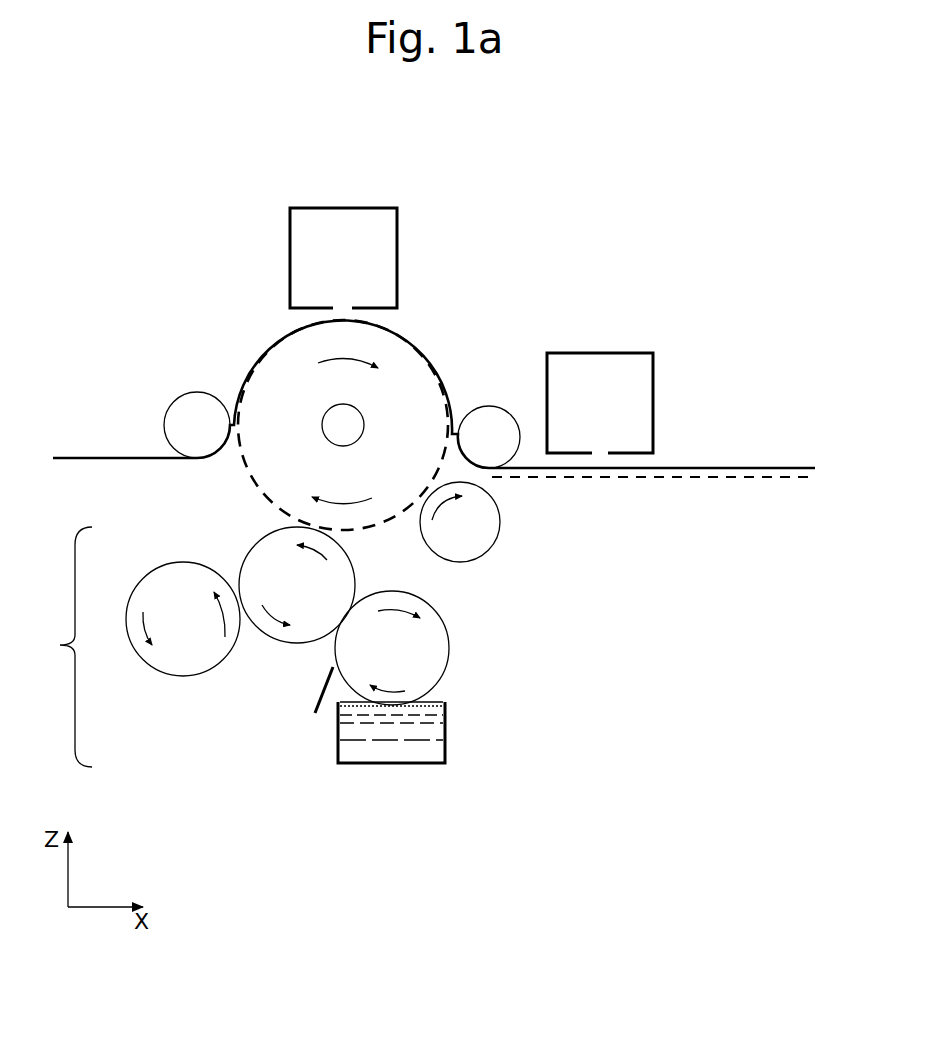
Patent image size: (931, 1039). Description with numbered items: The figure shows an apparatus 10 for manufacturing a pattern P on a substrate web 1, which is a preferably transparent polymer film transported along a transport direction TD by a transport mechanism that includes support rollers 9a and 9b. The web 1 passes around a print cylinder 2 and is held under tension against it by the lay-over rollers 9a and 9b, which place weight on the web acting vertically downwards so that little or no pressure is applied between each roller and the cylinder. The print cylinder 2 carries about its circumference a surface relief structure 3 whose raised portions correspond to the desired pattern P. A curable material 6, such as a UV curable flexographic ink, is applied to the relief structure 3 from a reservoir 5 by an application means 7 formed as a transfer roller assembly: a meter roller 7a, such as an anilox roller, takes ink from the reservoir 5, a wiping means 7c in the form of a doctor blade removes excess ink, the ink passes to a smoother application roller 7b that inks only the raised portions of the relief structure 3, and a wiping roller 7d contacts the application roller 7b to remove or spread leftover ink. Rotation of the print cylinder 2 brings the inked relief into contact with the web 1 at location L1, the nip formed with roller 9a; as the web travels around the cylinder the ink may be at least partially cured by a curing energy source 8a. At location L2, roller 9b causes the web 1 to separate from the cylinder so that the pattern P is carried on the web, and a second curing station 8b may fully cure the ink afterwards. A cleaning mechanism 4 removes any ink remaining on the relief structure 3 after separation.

The apparatus 10 is at (543, 203).
The substrate web 1 is at (128, 463).
The print cylinder 2 is at (353, 483).
The surface relief structure 3 is at (254, 490).
The cleaning mechanism 4 is at (478, 530).
The reservoir 5 is at (447, 745).
The curable material 6 is at (382, 755).
The application means 7 is at (65, 647).
The meter roller 7a is at (430, 638).
The application roller 7b is at (277, 630).
The wiping means 7c is at (322, 700).
The wiping roller 7d is at (173, 668).
The curing energy source 8a is at (307, 248).
The second curing station 8b is at (625, 393).
The support roller 9a is at (183, 418).
The support roller 9b is at (489, 418).
The pattern P is at (698, 484).
The location L1 is at (228, 396).
The location L2 is at (463, 405).
The transport direction TD is at (90, 443).